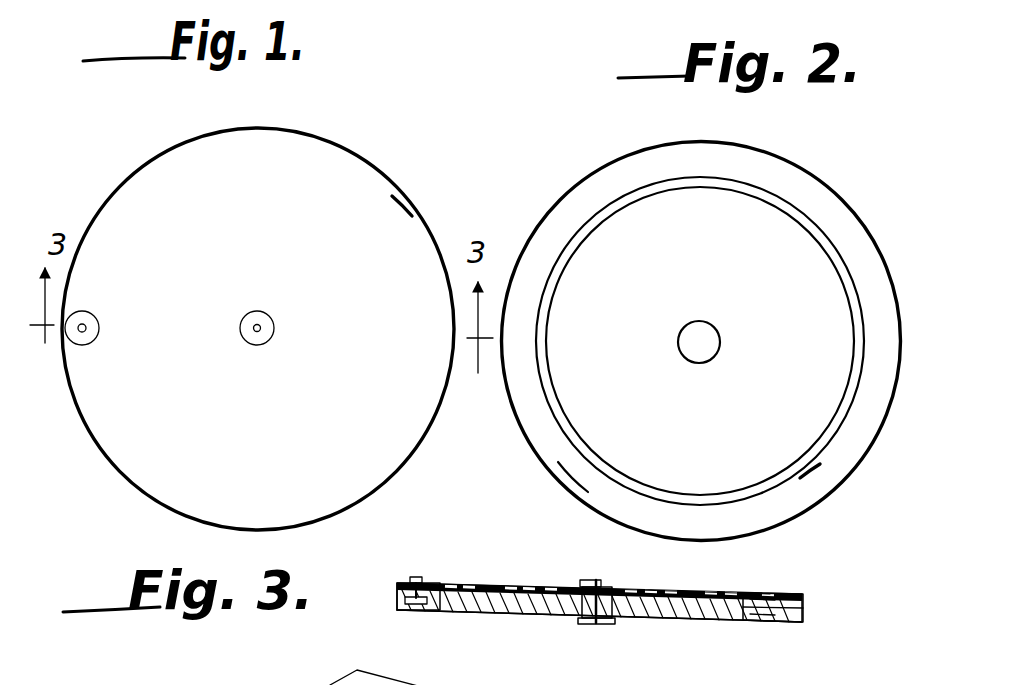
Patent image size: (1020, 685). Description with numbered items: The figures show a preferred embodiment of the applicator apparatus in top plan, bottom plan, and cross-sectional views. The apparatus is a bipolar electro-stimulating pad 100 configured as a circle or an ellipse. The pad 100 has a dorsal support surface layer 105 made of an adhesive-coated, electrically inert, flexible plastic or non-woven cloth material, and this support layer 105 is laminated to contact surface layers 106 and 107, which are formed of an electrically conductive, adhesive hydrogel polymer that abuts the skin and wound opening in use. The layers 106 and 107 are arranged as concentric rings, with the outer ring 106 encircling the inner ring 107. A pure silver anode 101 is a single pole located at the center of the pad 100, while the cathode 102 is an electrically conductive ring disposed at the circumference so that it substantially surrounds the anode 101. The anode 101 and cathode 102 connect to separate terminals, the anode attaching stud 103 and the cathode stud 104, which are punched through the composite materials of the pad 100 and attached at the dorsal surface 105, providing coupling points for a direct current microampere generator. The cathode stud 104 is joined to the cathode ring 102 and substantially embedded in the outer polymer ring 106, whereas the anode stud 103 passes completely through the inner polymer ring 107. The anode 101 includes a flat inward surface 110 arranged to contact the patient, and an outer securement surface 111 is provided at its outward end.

In FIG. 1, the electro-stimulating pad 100 is at (398, 493).
In FIG. 2, the electro-stimulating pad 100 is at (527, 461).
In FIG. 3, the electro-stimulating pad 100 is at (805, 557).
In FIG. 3, the anode 101 is at (617, 613).
In FIG. 2, the cathode 102 is at (587, 488).
In FIG. 3, the cathode 102 is at (803, 603).
In FIG. 1, the anode attaching stud 103 is at (261, 325).
In FIG. 2, the anode attaching stud 103 is at (699, 342).
In FIG. 3, the anode attaching stud 103 is at (604, 583).
In FIG. 1, the cathode attaching stud 104 is at (101, 323).
In FIG. 3, the cathode attaching stud 104 is at (428, 556).
In FIG. 1, the dorsal support surface layer 105 is at (398, 209).
In FIG. 2, the dorsal support surface layer 105 is at (783, 484).
In FIG. 3, the dorsal support surface layer 105 is at (539, 562).
In FIG. 2, the outer contact surface layer 106 is at (624, 162).
In FIG. 3, the outer contact surface layer 106 is at (421, 613).
In FIG. 2, the inner contact surface layer 107 is at (757, 209).
In FIG. 3, the inner contact surface layer 107 is at (718, 623).
In FIG. 3, the flat inward surface 110 is at (581, 623).
In FIG. 3, the outer securement surface 111 is at (584, 585).